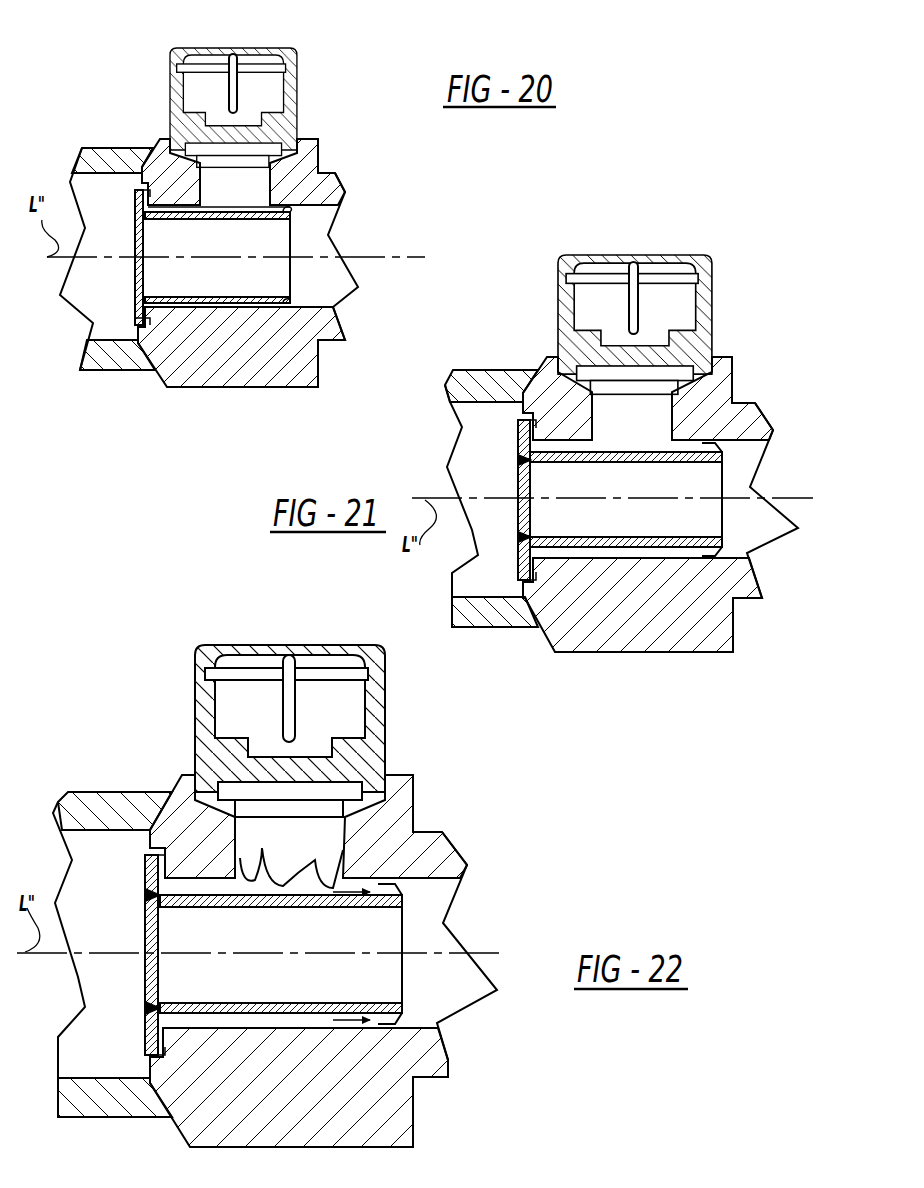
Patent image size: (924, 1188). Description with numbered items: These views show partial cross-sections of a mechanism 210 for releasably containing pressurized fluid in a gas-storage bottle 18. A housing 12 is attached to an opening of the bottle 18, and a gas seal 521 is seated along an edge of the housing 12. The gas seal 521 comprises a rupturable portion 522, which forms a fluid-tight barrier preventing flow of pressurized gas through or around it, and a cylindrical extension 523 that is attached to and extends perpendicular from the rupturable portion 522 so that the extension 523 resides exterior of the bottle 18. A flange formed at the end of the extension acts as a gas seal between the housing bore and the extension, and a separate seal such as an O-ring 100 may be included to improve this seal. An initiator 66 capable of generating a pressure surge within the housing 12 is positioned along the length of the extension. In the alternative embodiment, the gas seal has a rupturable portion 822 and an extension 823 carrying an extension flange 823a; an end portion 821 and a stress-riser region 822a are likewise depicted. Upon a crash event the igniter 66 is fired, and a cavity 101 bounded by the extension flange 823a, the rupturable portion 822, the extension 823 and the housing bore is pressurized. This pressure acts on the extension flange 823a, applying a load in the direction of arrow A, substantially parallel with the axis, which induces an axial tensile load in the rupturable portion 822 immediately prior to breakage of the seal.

In FIG. 20, the housing 12 is at (318, 139).
In FIG. 21, the housing 12 is at (733, 357).
In FIG. 22, the housing 12 is at (413, 775).
In FIG. 20, the bottle 18 is at (125, 148).
In FIG. 21, the bottle 18 is at (483, 378).
In FIG. 22, the bottle 18 is at (140, 806).
In FIG. 20, the initiator 66 is at (235, 52).
In FIG. 21, the initiator 66 is at (634, 260).
In FIG. 22, the initiator 66 is at (291, 654).
In FIG. 20, the O-ring 100 is at (292, 198).
In FIG. 22, the cavity 101 is at (173, 888).
In FIG. 20, the mechanism 210 is at (110, 392).
In FIG. 21, the mechanism 210 is at (530, 650).
In FIG. 22, the mechanism 210 is at (165, 1152).
In FIG. 20, the gas seal 521 is at (137, 322).
In FIG. 20, the rupturable portion 522 is at (133, 228).
In FIG. 20, the extension 523 is at (277, 275).
In FIG. 21, the tube end wall 821 is at (725, 465).
In FIG. 22, the tube end wall 821 is at (407, 978).
In FIG. 21, the rupturable portion 822 is at (512, 420).
In FIG. 21, the flange tab 822a is at (512, 535).
In FIG. 22, the flange tab 822a is at (145, 858).
In FIG. 21, the extension 823 is at (665, 547).
In FIG. 22, the extension 823 is at (393, 940).
In FIG. 21, the extension flange 823a is at (720, 442).
In FIG. 22, the extension flange 823a is at (393, 887).
In FIG. 22, the arrow A is at (360, 1020).